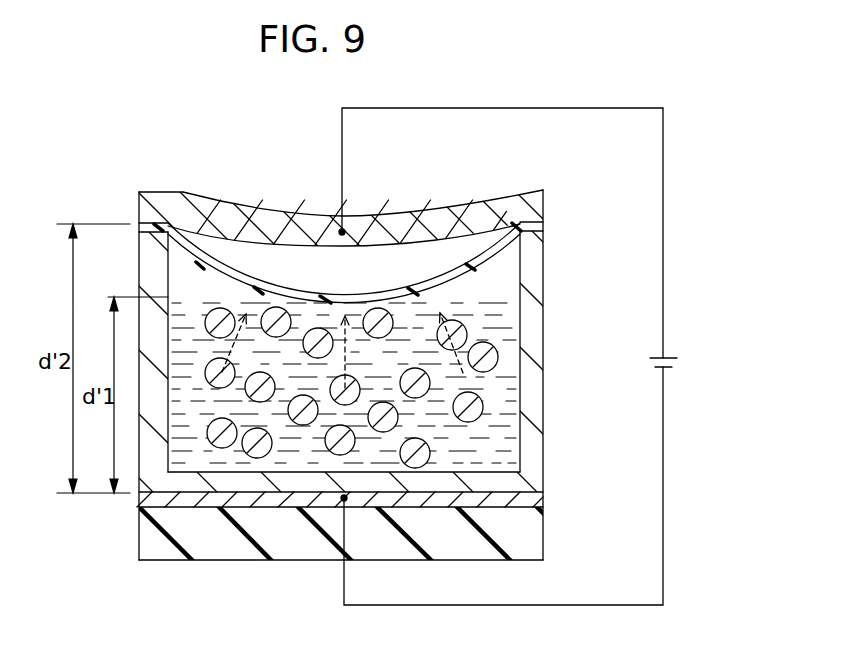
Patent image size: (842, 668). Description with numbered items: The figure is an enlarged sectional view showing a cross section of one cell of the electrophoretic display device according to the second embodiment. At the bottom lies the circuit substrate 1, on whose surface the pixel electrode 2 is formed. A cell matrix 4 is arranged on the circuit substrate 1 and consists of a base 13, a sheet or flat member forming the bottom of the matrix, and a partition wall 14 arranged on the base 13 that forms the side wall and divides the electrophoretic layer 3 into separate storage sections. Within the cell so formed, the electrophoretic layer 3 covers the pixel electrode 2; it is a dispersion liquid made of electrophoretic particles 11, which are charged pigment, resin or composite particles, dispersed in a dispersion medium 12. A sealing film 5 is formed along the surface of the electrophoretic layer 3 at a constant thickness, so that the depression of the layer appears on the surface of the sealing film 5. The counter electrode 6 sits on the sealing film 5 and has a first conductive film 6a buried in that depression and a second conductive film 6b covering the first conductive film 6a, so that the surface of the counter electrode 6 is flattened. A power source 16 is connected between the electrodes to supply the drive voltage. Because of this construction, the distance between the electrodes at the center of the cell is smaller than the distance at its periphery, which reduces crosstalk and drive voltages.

The circuit substrate 1 is at (222, 543).
The pixel electrode 2 is at (185, 500).
The electrophoretic layer 3 is at (344, 482).
The cell matrix 4 is at (421, 400).
The sealing film 5 is at (242, 283).
The counter electrode 6 is at (391, 218).
The first conductive film 6a is at (440, 247).
The second conductive film 6b is at (398, 224).
The electrophoretic particles 11 is at (334, 457).
The dispersion medium 12 is at (282, 433).
The base 13 is at (452, 484).
The partition wall 14 is at (533, 358).
The power source 16 is at (670, 355).